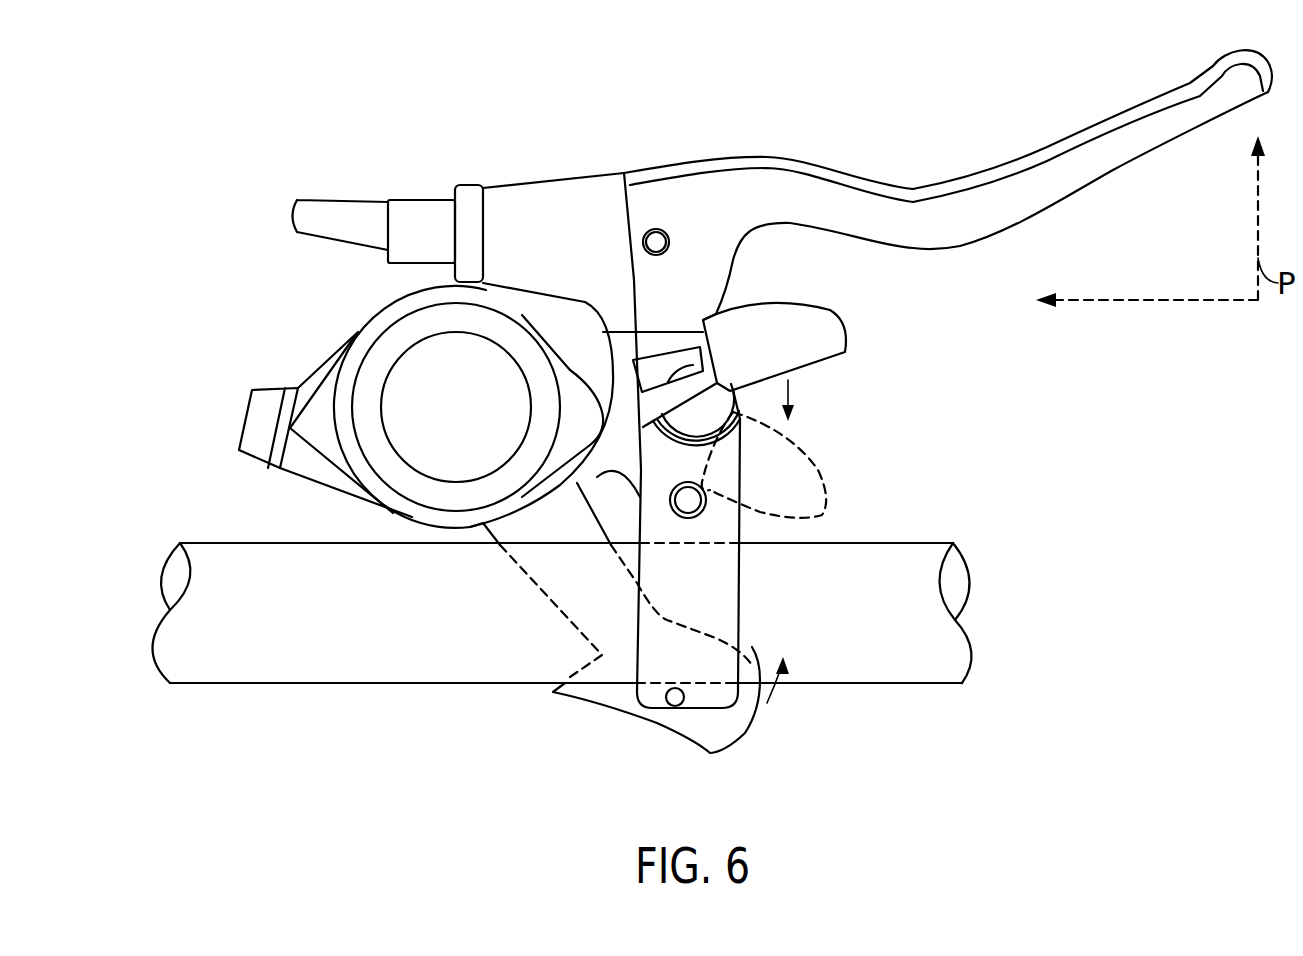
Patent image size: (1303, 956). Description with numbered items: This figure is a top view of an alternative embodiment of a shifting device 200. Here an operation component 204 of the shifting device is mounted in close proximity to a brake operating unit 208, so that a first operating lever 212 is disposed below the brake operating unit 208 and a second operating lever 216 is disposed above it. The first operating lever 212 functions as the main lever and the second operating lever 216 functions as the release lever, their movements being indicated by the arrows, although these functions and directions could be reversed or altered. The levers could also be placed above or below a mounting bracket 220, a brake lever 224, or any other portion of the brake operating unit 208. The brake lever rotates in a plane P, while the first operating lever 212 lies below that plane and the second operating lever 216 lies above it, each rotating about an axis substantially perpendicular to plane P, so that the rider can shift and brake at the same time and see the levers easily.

The shifting device 200 is at (292, 340).
The operation component 204 is at (357, 333).
The brake operating unit 208 is at (628, 127).
The first operating lever 212 is at (747, 730).
The second operating lever 216 is at (825, 332).
The mounting bracket 220 is at (713, 590).
The brake lever 224 is at (912, 188).